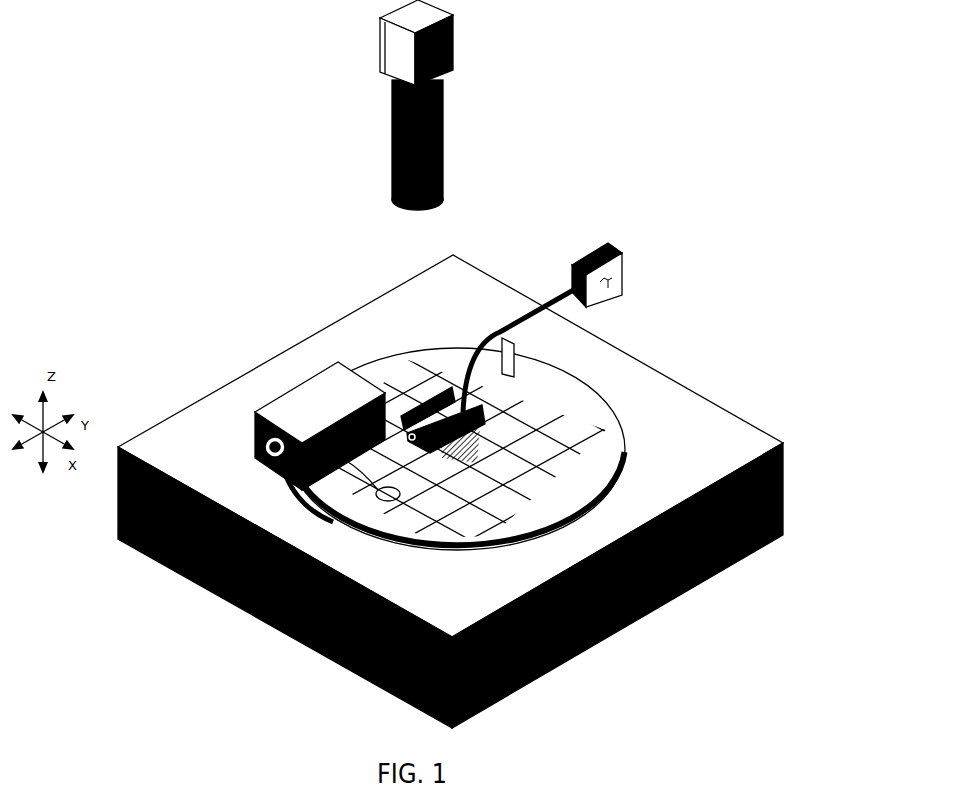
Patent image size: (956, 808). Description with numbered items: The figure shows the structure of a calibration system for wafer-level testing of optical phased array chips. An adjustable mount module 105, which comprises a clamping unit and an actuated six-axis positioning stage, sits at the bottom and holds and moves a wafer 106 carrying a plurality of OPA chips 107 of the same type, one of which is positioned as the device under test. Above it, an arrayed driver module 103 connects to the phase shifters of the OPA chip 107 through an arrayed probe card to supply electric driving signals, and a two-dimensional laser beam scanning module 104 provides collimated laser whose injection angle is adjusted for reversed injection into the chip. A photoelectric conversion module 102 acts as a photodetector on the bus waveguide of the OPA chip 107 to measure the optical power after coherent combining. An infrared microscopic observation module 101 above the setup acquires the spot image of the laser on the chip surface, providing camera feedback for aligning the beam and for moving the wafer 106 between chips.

The infrared microscopic observation module 101 is at (470, 65).
The photoelectric conversion module 102 is at (507, 340).
The arrayed driver module 103 is at (405, 413).
The two-dimensional laser beam scanning module 104 is at (280, 407).
The adjustable mount module 105 is at (647, 620).
The wafer 106 is at (582, 403).
The OPA chip 107 is at (568, 472).